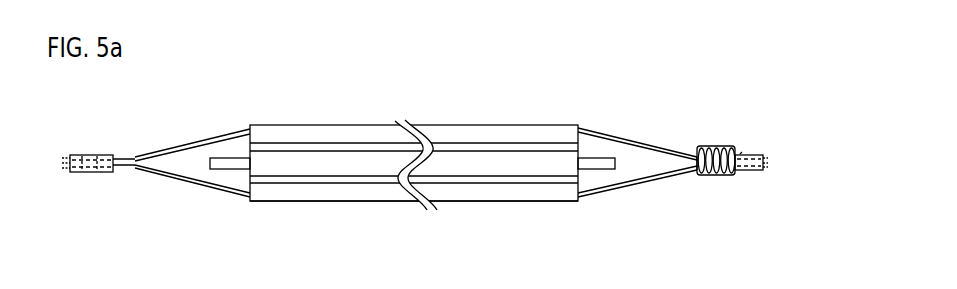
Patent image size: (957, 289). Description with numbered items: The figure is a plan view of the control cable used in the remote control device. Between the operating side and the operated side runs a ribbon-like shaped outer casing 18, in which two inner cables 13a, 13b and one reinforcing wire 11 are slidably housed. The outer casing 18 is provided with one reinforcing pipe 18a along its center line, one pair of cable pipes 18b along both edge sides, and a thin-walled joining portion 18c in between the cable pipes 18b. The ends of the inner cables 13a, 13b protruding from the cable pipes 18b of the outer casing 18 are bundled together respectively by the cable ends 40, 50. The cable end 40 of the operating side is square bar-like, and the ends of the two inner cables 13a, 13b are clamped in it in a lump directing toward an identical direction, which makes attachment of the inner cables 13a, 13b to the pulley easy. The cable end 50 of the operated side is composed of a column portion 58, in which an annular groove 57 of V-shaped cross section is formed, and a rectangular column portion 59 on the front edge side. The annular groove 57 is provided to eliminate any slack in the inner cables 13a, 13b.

The reinforcing wire 11 is at (230, 156).
The inner cable 13a is at (195, 143).
The inner cable 13b is at (198, 190).
The outer casing 18 is at (418, 160).
The reinforcing pipe 18a is at (505, 165).
The cable pipe 18b is at (463, 125).
The thin-walled joining portion 18c is at (543, 180).
The cable end 40 is at (90, 155).
The cable end 50 is at (741, 153).
The annular groove 57 is at (704, 176).
The column portion 58 is at (716, 146).
The rectangular column portion 59 is at (757, 155).